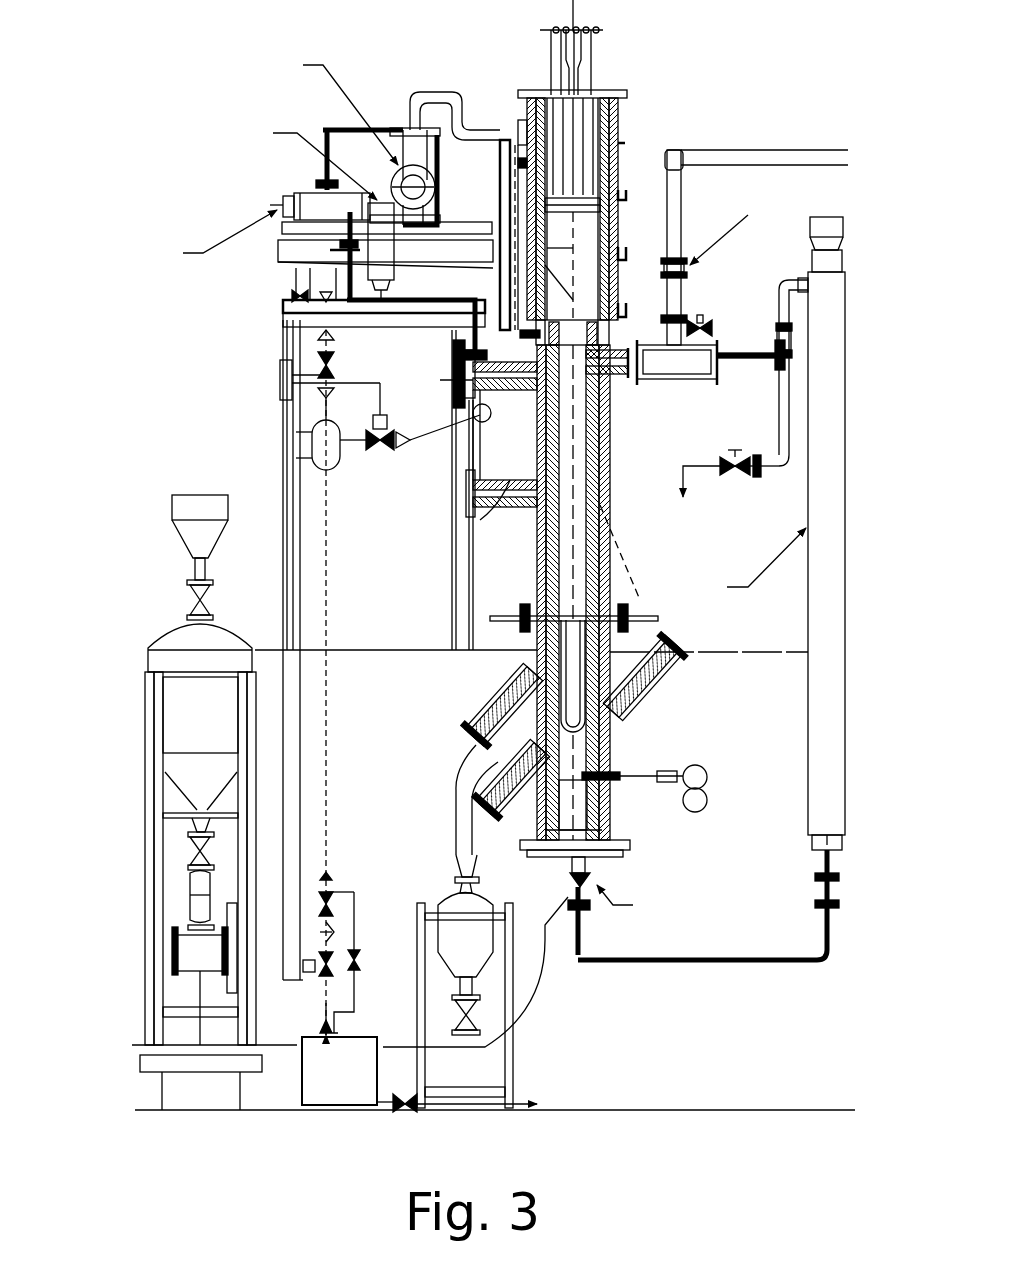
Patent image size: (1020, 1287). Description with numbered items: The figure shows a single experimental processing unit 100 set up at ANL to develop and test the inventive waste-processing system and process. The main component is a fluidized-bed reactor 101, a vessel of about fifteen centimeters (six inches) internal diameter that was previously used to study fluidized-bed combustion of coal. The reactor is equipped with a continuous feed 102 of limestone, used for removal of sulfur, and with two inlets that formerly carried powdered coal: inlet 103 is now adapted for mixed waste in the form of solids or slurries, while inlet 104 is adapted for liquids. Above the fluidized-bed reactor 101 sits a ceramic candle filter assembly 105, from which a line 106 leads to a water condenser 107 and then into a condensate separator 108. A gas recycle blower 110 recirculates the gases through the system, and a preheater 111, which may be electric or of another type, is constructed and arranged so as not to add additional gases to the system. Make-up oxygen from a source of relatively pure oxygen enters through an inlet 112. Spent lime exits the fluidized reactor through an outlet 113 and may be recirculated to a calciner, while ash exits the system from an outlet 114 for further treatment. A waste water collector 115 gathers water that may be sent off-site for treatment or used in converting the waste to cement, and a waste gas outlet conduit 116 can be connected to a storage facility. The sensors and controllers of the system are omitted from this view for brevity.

The processing unit 100 is at (162, 365).
The fluidized-bed reactor 101 is at (622, 455).
The continuous feed 102 is at (142, 662).
The inlet 103 is at (508, 510).
The inlet 104 is at (654, 670).
The ceramic candle filter assembly 105 is at (618, 125).
The line 106 is at (448, 92).
The water condenser 107 is at (178, 53).
The condensate separator 108 is at (137, 143).
The gas recycle blower 110 is at (115, 271).
The preheater 111 is at (837, 490).
The inlet 112 is at (737, 890).
The outlet 113 is at (455, 828).
The outlet 114 is at (518, 792).
The waste water collector 115 is at (328, 1104).
The waste gas outlet conduit 116 is at (739, 356).